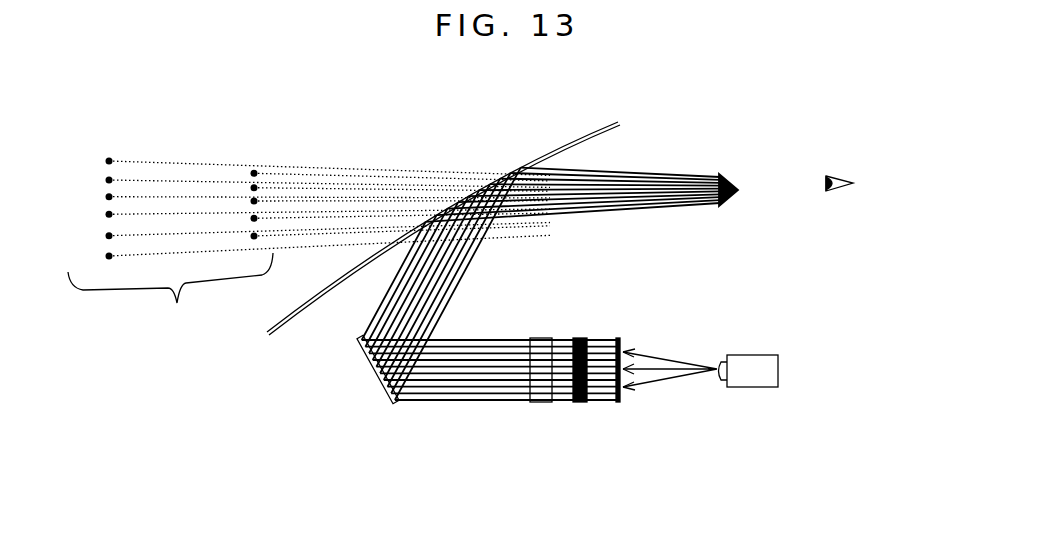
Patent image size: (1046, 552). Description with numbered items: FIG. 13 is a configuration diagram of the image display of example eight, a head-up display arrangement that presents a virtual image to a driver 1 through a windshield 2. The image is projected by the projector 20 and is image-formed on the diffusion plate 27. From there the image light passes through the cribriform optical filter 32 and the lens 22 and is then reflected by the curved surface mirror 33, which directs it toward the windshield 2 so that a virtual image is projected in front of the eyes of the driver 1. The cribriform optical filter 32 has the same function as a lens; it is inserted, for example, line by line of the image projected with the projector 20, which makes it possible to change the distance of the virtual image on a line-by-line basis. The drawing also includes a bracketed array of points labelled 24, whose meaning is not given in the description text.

The driver 1 is at (863, 175).
The windshield 2 is at (612, 127).
The projector 20 is at (772, 387).
The lens 22 is at (543, 402).
The display element pixels (image light) 24 is at (309, 250).
The diffusion plate 27 is at (620, 402).
The cribriform optical filter 32 is at (587, 340).
The curved surface mirror 33 is at (383, 400).